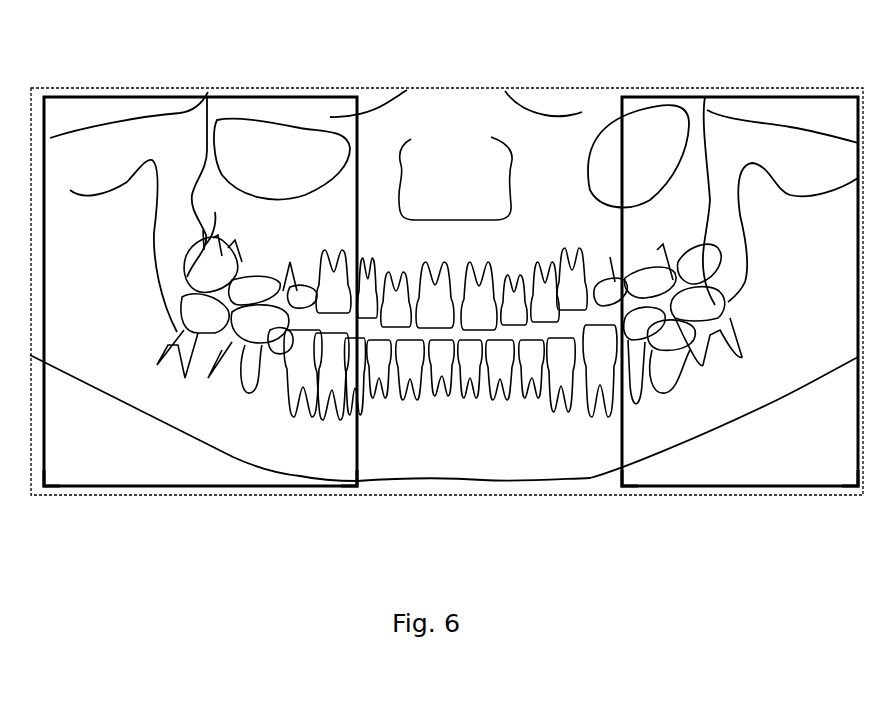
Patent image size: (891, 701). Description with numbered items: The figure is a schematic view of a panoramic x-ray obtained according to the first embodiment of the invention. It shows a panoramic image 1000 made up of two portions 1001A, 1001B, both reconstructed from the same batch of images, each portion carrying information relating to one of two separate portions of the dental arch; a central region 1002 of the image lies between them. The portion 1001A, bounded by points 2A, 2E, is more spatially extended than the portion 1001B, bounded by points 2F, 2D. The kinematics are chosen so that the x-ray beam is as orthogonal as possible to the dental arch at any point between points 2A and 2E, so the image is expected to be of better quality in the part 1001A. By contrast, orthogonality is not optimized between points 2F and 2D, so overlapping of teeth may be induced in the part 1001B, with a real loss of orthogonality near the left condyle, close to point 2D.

The panoramic image 1000 is at (524, 527).
The portion 1001A is at (259, 97).
The portion 1001B is at (744, 97).
The central region of image 1002 is at (500, 100).
The point 2A is at (59, 463).
The point 2E is at (342, 470).
The point 2F is at (635, 475).
The point 2D is at (845, 472).